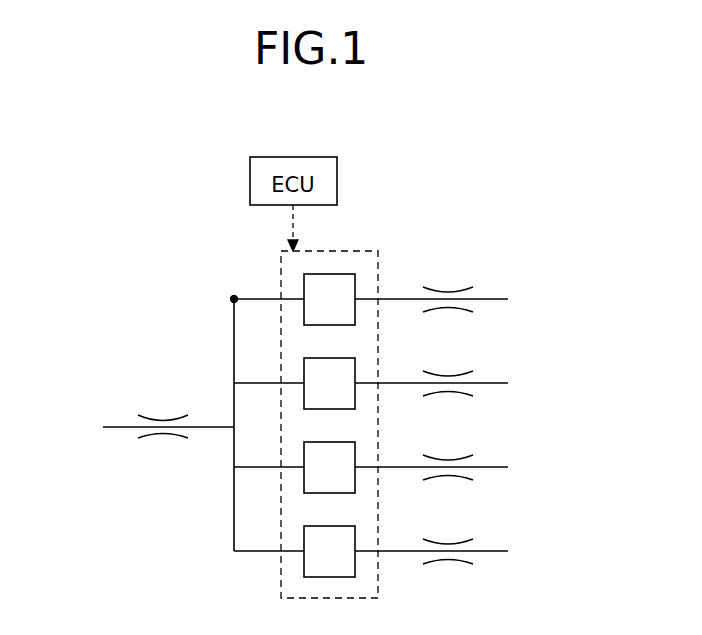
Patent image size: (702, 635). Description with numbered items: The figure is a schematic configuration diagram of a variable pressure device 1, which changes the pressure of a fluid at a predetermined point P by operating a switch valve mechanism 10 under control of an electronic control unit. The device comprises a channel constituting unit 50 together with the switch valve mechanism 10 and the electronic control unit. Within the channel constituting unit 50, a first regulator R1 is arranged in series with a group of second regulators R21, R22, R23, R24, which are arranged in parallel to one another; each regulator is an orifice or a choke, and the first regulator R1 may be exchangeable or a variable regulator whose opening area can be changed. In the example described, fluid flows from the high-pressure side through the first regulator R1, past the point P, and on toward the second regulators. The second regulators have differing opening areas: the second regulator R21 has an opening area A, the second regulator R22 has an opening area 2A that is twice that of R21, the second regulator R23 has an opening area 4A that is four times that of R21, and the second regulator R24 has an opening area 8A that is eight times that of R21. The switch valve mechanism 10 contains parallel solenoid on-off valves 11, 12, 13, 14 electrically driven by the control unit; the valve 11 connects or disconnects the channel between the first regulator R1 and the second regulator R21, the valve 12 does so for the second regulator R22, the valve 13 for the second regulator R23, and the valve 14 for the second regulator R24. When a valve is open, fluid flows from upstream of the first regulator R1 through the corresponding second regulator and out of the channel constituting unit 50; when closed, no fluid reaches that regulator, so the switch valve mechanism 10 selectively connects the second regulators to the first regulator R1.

The variable pressure device 1 is at (423, 157).
The switch valve mechanism 10 is at (370, 250).
The valve 11 is at (313, 274).
The valve 12 is at (313, 358).
The valve 13 is at (313, 442).
The valve 14 is at (313, 526).
The channel constituting unit 50 is at (395, 272).
The predetermined point P is at (233, 297).
The first regulator R1 is at (148, 413).
The second regulator R21 is at (468, 288).
The second regulator R22 is at (468, 372).
The second regulator R23 is at (468, 456).
The second regulator R24 is at (468, 540).
The opening area A is at (448, 275).
The opening area 2A is at (448, 359).
The opening area 4A is at (448, 443).
The opening area 8A is at (448, 527).